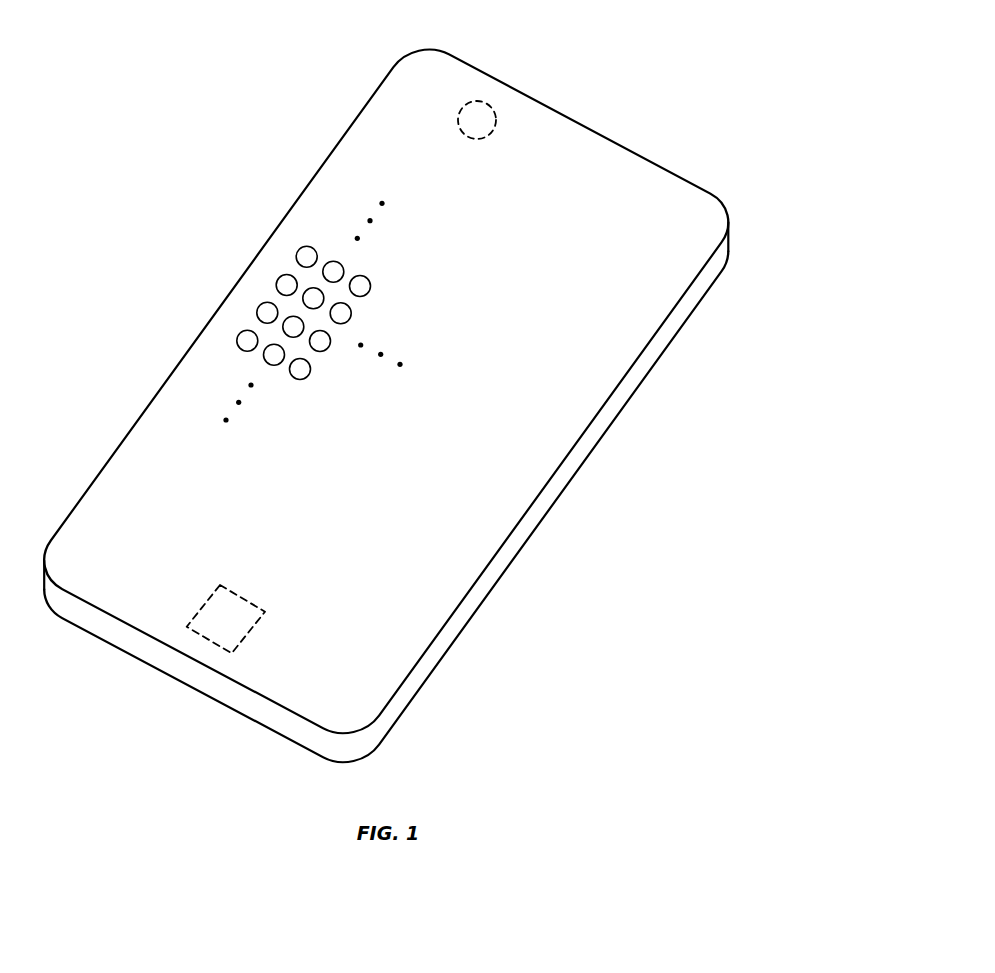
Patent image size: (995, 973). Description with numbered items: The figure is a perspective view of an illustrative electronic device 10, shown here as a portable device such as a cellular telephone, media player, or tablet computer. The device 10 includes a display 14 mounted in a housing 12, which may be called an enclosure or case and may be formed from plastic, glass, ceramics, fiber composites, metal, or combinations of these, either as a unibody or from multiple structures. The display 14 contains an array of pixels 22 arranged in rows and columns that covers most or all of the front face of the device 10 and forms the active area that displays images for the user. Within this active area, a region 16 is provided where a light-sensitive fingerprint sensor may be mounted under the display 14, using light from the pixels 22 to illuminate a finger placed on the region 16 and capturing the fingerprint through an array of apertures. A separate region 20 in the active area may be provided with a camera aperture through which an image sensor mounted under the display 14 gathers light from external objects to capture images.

The electronic device 10 is at (723, 92).
The housing 12 is at (640, 378).
The display 14 is at (500, 483).
The region 16 is at (212, 643).
The region 20 is at (481, 100).
The pixels 22 is at (296, 253).